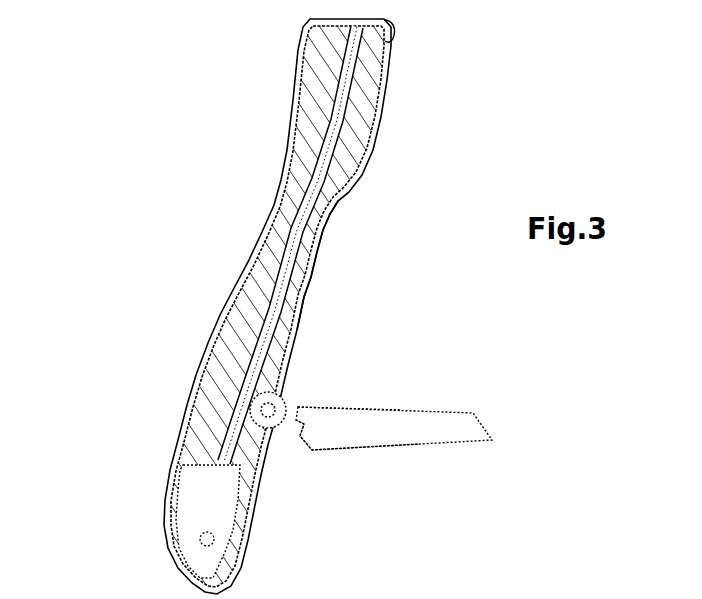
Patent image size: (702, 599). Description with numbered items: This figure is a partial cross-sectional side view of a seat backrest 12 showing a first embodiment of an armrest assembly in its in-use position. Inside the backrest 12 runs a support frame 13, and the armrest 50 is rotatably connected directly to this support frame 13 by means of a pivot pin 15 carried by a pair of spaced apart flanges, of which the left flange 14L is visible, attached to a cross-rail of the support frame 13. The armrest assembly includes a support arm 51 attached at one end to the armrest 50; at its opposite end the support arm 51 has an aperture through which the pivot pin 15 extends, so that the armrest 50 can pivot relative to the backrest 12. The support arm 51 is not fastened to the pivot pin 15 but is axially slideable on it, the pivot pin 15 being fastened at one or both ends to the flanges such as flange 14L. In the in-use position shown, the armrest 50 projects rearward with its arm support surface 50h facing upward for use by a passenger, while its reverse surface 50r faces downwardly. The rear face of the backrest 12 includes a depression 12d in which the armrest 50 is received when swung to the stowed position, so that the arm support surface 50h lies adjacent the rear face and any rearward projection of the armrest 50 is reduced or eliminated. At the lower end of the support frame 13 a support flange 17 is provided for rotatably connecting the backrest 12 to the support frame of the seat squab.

The backrest 12 is at (292, 57).
The support frame 13 is at (312, 159).
The depression 12d is at (314, 257).
The pivot pin 15 is at (260, 407).
The flange 14L is at (279, 393).
The armrest 50 is at (483, 422).
The arm support surface 50h is at (379, 406).
The reverse surface 50r is at (391, 445).
The support arm 51 is at (292, 436).
The support flange 17 is at (184, 532).